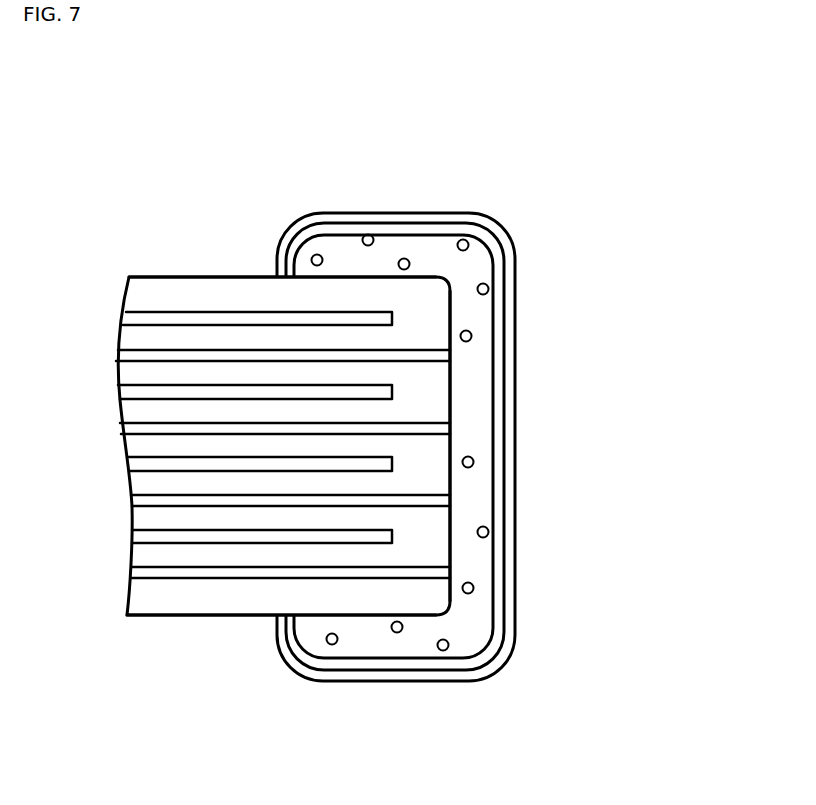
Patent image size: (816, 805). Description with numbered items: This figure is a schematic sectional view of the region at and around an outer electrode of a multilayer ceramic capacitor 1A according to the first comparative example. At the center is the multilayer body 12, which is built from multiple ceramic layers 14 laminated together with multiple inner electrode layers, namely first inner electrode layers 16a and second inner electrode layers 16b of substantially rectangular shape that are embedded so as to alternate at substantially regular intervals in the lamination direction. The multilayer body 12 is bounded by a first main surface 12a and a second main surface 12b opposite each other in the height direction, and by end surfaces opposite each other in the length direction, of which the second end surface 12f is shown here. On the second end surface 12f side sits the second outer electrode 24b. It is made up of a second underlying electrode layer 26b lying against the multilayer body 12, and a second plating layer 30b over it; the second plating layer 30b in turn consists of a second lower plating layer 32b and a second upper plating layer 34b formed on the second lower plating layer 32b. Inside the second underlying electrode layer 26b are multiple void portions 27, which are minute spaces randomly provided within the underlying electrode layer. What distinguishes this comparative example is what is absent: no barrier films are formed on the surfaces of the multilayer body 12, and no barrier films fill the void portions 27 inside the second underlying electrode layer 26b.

The multilayer ceramic capacitor 1A is at (143, 124).
The multilayer body 12 is at (262, 276).
The first main surface 12a is at (218, 277).
The second main surface 12b is at (225, 615).
The second end surface 12f is at (451, 407).
The ceramic layers 14 is at (133, 342).
The first inner electrode layers 16a is at (243, 390).
The second inner electrode layers 16b is at (171, 425).
The second outer electrode 24b is at (445, 98).
The second underlying electrode layer 26b is at (338, 250).
The void portions 27 is at (470, 336).
The second plating layer 30b is at (482, 150).
The second lower plating layer 32b is at (383, 228).
The second upper plating layer 34b is at (437, 216).